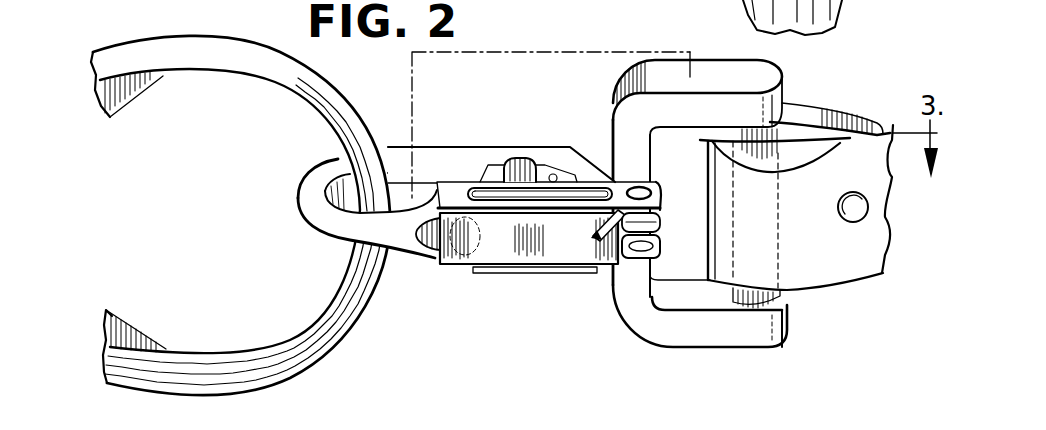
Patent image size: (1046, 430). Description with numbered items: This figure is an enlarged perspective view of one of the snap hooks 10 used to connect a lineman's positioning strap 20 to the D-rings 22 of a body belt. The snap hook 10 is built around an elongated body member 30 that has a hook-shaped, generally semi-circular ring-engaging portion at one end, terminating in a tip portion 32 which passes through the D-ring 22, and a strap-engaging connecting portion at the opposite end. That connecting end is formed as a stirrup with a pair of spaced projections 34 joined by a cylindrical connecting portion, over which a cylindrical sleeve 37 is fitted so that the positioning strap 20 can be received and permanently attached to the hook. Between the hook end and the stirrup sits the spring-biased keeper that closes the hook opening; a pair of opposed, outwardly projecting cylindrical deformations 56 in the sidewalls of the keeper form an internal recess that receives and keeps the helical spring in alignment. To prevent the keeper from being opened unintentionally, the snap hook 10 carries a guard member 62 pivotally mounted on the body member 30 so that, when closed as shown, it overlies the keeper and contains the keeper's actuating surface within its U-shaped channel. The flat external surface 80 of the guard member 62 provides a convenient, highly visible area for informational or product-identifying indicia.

The snap hook 10 is at (566, 125).
The positioning strap 20 is at (873, 246).
The D-ring 22 is at (240, 53).
The body member 30 is at (461, 153).
The tip portion 32 is at (411, 258).
The spaced projections 34 is at (752, 77).
The cylindrical sleeve 37 is at (740, 142).
The cylindrical deformations 56 is at (518, 165).
The guard member 62 is at (574, 254).
The flat external surface 80 is at (511, 258).